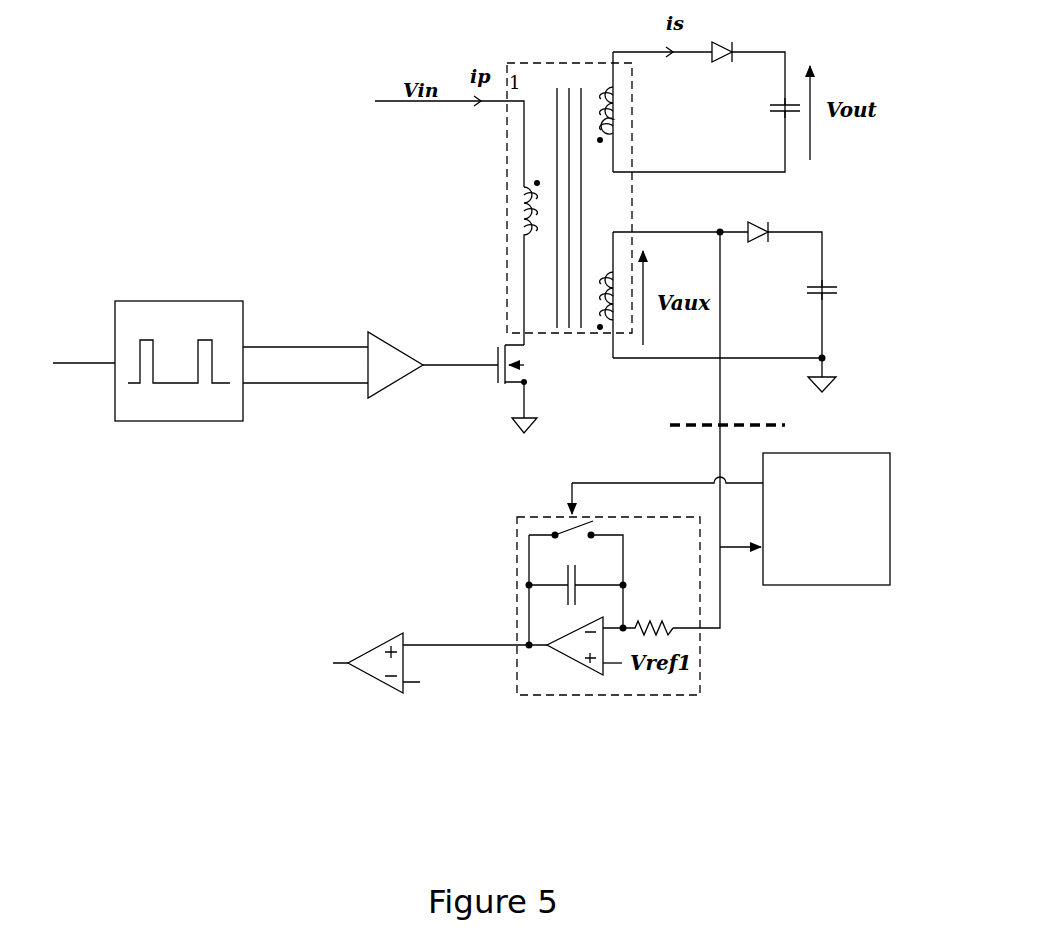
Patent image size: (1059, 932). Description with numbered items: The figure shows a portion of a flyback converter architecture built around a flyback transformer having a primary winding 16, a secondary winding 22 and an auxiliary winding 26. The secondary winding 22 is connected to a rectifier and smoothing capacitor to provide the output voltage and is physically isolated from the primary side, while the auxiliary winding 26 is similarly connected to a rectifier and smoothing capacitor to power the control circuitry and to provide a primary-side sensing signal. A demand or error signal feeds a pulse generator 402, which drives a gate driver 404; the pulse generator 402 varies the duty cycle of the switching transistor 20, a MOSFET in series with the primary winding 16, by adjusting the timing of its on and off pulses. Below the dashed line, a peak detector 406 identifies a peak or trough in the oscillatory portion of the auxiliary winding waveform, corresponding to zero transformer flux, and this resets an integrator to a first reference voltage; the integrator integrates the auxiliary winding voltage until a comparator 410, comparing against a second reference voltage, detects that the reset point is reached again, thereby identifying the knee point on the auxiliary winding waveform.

The primary winding 16 is at (504, 212).
The secondary winding 22 is at (633, 103).
The auxiliary winding 26 is at (601, 343).
The switching transistor 20 is at (496, 394).
The pulse generator 402 is at (165, 300).
The gate driver 404 is at (392, 329).
The peak detector 406 is at (815, 590).
The comparator 410 is at (409, 714).